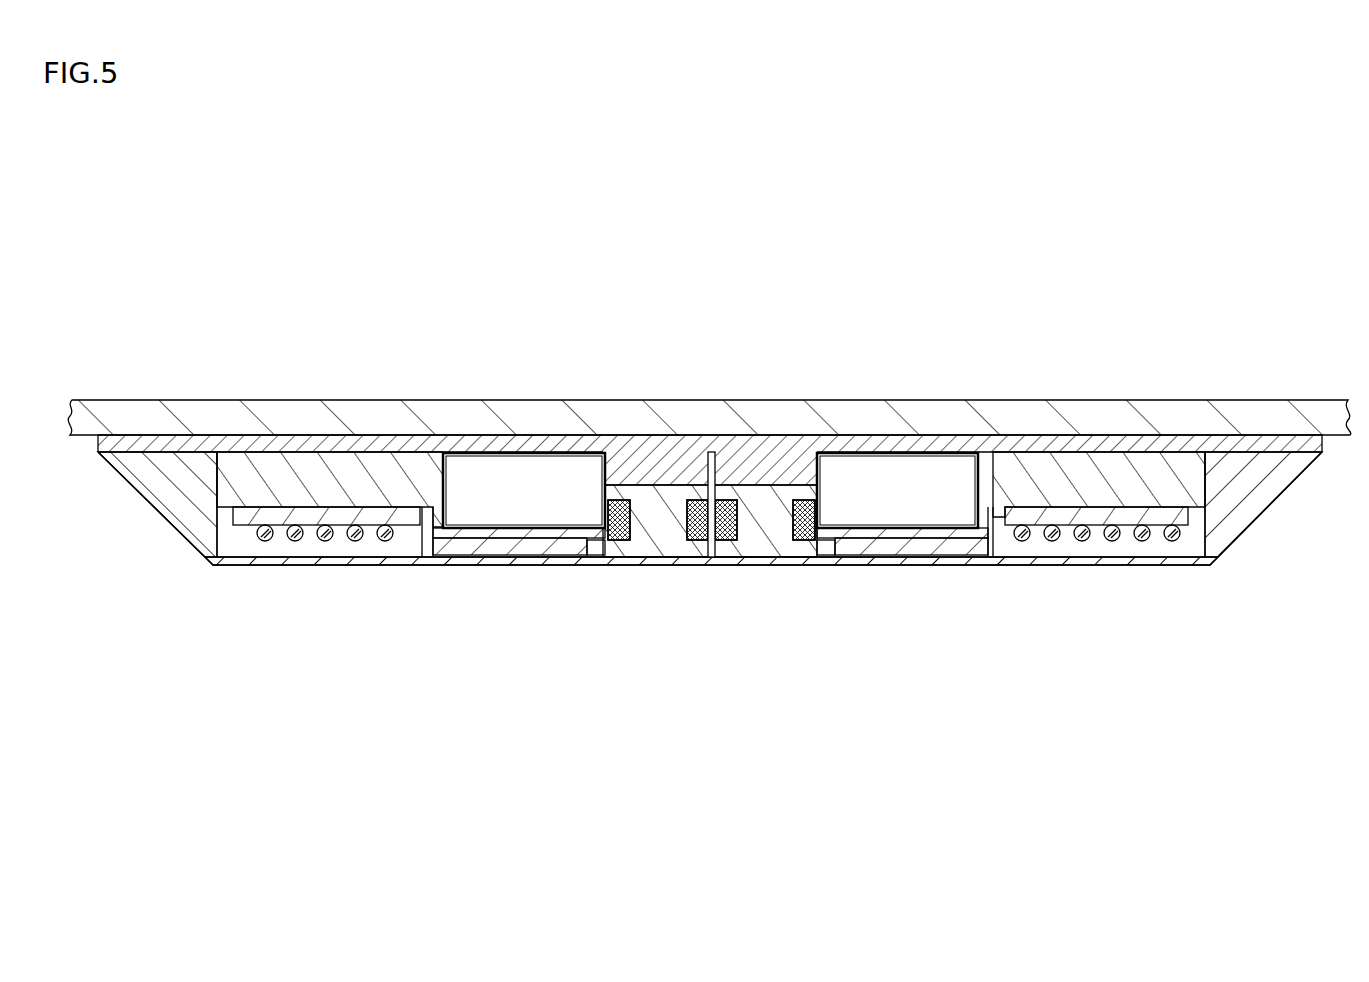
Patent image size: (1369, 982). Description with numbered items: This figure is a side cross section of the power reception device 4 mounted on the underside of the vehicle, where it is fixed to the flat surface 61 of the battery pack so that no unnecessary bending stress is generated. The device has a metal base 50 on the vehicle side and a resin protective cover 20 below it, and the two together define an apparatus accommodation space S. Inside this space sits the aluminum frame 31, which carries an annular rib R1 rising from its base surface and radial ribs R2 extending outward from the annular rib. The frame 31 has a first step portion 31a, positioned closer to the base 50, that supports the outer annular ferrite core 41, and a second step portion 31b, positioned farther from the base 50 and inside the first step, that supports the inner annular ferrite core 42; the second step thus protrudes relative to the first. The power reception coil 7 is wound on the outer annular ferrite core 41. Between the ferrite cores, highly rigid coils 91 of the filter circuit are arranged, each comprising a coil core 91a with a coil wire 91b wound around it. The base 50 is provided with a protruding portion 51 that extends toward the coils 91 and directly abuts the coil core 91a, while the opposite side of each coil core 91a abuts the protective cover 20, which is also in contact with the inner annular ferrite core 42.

The power reception device 4 is at (1199, 641).
The power reception coil 7 is at (265, 541).
The protective cover 20 is at (322, 563).
The frame 31 is at (520, 530).
The first step portion 31a is at (423, 512).
The second step portion 31b is at (540, 530).
The outer annular ferrite core 41 is at (376, 510).
The inner annular ferrite core 42 is at (515, 540).
The base 50 is at (1050, 446).
The protruding portion 51 is at (770, 482).
The flat surface 61 is at (962, 422).
The coil 91 is at (718, 613).
The coil core 91a is at (660, 523).
The coil wire 91b is at (692, 527).
The annular rib R1 is at (435, 515).
The radial rib R2 is at (337, 485).
The apparatus accommodation space S is at (1177, 548).